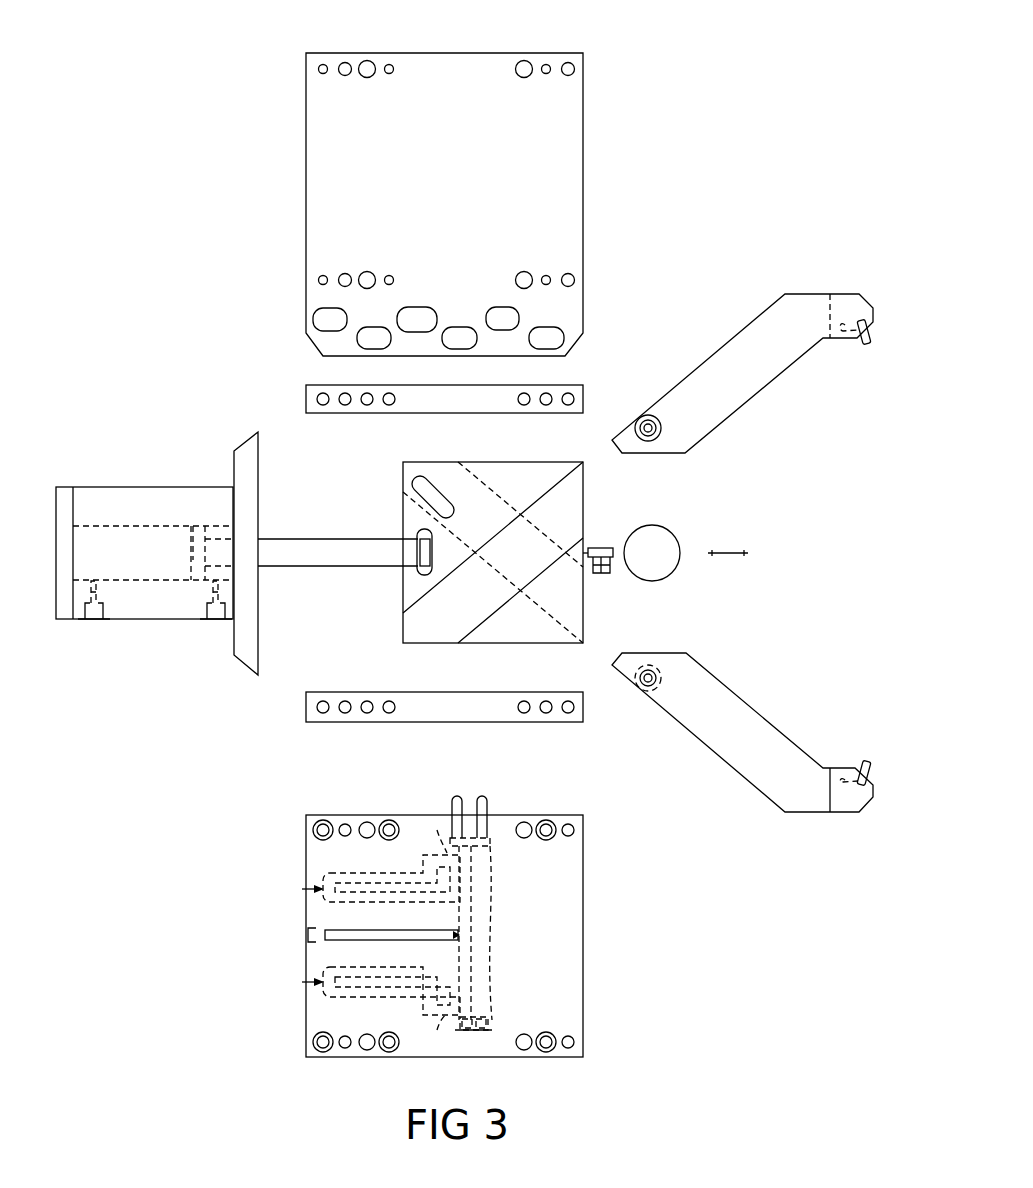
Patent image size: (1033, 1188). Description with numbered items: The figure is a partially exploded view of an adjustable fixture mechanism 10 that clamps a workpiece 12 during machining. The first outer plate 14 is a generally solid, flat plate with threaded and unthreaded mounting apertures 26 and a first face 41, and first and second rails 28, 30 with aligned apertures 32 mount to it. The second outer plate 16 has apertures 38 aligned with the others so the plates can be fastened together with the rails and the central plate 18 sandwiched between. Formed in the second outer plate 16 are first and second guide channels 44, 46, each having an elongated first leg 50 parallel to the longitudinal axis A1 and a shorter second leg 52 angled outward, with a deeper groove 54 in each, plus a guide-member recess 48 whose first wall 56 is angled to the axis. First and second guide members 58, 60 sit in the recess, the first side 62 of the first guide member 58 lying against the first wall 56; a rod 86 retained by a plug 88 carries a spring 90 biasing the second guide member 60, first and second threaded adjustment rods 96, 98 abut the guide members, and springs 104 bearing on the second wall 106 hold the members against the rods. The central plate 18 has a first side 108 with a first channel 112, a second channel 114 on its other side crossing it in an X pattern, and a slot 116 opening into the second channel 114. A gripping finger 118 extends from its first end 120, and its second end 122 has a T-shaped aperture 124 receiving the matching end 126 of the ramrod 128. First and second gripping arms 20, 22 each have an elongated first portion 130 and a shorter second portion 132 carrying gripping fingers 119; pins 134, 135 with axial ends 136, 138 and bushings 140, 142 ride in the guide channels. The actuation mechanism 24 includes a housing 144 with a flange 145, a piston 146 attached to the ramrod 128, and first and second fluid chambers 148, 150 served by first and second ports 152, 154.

The adjustable fixture mechanism 10 is at (750, 118).
The workpiece 12 is at (670, 535).
The first outer plate 14 is at (454, 180).
The second outer plate 16 is at (431, 935).
The central plate 18 is at (457, 549).
The first gripping arm 20 is at (739, 385).
The second gripping arm 22 is at (742, 716).
The actuation mechanism 24 is at (115, 448).
The mounting apertures 26 is at (389, 63).
The first rail 28 is at (582, 388).
The second rail 30 is at (545, 692).
The apertures 32 is at (389, 406).
The apertures 38 is at (389, 820).
The first face 41 is at (335, 178).
The first guide channel 44 is at (302, 889).
The second guide channel 46 is at (302, 982).
The guide-member recess 48 is at (490, 890).
The first leg 50 is at (330, 845).
The second leg 52 is at (437, 830).
The groove 54 is at (335, 873).
The first wall 56 is at (490, 1000).
The first guide member 58 is at (507, 872).
The second guide member 60 is at (492, 828).
The first side 62 is at (490, 938).
The rod 86 is at (345, 940).
The plug 88 is at (306, 935).
The spring 90 is at (458, 928).
The first threaded adjustment rod 96 is at (483, 797).
The second threaded adjustment rod 98 is at (455, 797).
The springs 104 is at (460, 1030).
The second wall 106 is at (492, 1022).
The first side 108 is at (523, 630).
The first channel 112 is at (445, 628).
The second channel 114 is at (490, 480).
The slot 116 is at (437, 478).
The gripping finger 118 is at (600, 548).
The gripping fingers 119 is at (862, 345).
The first end 120 is at (588, 545).
The second end 122 is at (417, 529).
The T-shaped aperture 124 is at (418, 535).
The end 126 is at (420, 568).
The ramrod 128 is at (333, 565).
The first portion 130 is at (739, 555).
The second portion 132 is at (850, 298).
The pin 134 is at (680, 415).
The pin 135 is at (675, 700).
The axial end 136 is at (646, 418).
The axial end 138 is at (650, 668).
The bushing 140 is at (652, 440).
The bushing 142 is at (663, 680).
The housing 144 is at (152, 632).
The flange 145 is at (250, 448).
The piston 146 is at (194, 530).
The first fluid chamber 148 is at (135, 570).
The second fluid chamber 150 is at (228, 580).
The first port 152 is at (92, 619).
The second port 154 is at (214, 619).
The longitudinal axis A1 is at (726, 553).